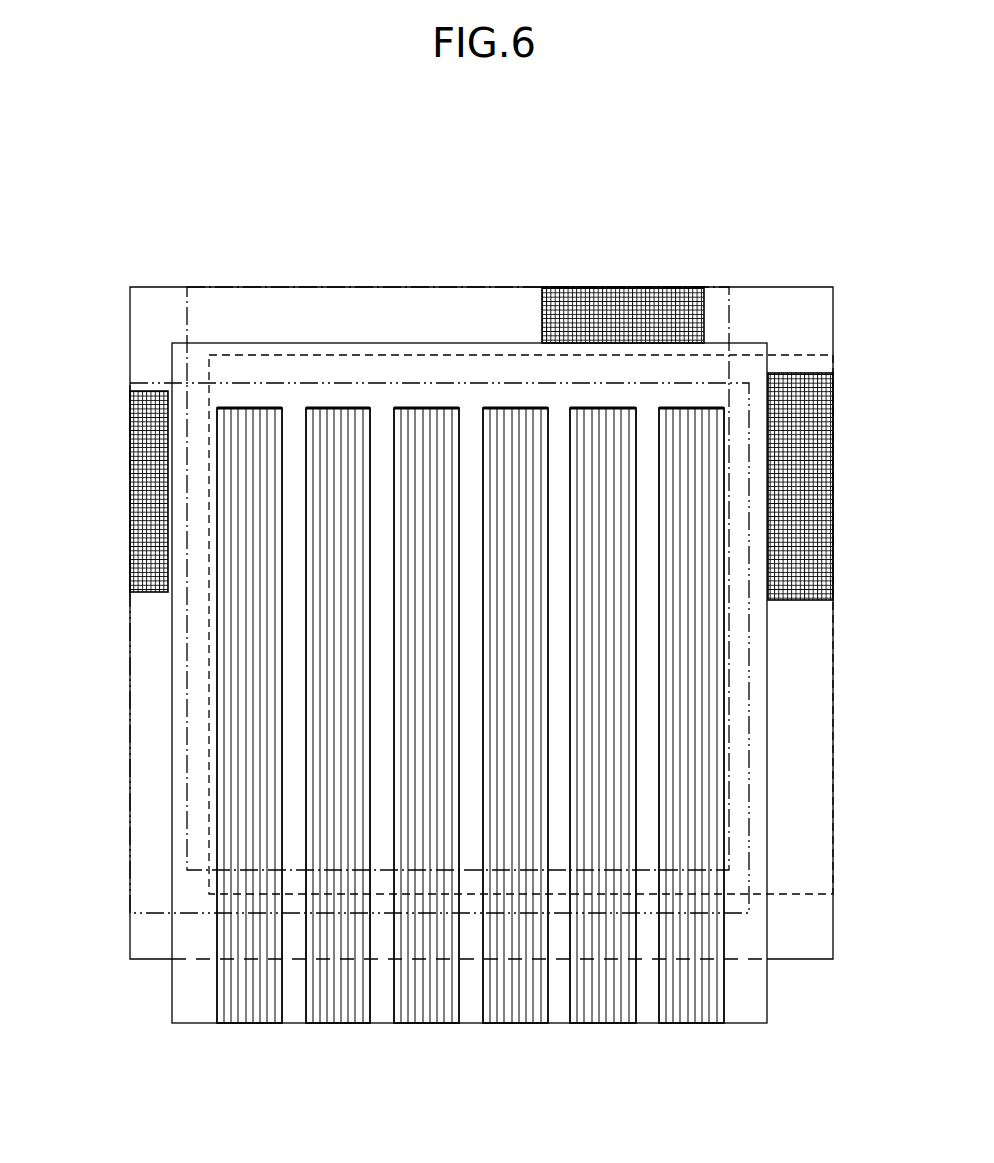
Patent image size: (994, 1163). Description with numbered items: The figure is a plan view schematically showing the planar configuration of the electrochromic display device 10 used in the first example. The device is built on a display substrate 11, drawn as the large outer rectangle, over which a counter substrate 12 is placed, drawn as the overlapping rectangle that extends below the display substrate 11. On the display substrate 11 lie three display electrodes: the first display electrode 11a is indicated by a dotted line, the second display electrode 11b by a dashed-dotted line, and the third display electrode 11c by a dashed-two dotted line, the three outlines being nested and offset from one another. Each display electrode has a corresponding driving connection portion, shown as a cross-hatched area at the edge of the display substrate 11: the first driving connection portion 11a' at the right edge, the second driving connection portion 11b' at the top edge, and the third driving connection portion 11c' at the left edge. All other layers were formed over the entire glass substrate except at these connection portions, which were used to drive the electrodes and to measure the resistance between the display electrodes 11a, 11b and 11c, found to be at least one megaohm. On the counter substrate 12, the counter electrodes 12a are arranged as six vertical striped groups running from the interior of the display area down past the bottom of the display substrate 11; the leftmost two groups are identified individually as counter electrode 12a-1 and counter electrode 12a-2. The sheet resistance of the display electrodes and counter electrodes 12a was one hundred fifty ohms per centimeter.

The electrochromic display device 10 is at (848, 204).
The display substrate 11 is at (813, 930).
The first display electrode 11a is at (562, 607).
The first driving connection portion 11a' is at (846, 486).
The second display electrode 11b is at (478, 547).
The second driving connection portion 11b' is at (623, 284).
The third display electrode 11c is at (397, 631).
The third driving connection portion 11c' is at (104, 491).
The counter substrate 12 is at (745, 998).
The counter electrodes 12a is at (470, 748).
The counter electrode 12a-1 is at (337, 1003).
The counter electrode 12a-2 is at (427, 1003).